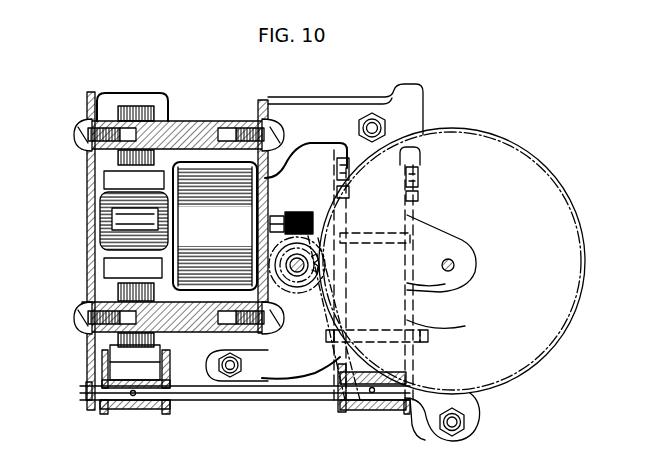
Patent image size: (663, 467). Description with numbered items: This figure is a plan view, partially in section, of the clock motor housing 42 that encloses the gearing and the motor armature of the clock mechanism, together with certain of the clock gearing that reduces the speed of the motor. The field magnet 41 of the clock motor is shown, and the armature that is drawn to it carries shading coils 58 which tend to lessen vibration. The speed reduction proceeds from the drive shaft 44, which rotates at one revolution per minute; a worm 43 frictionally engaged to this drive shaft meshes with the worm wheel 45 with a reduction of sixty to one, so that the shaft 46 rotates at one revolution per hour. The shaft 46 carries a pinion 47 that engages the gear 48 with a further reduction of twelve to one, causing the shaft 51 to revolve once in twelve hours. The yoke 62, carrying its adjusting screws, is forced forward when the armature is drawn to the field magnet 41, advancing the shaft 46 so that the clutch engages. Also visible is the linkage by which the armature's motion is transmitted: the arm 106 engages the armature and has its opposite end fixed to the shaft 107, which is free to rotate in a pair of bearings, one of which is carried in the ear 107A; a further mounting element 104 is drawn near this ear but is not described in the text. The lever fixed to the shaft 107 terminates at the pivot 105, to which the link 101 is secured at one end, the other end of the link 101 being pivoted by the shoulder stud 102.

The field magnet 41 is at (150, 110).
The housing 42 is at (215, 226).
The worm 43 is at (296, 212).
The drive shaft 44 is at (313, 238).
The worm wheel 45 is at (285, 290).
The shaft 46 is at (302, 268).
The pinion 47 is at (297, 278).
The gear 48 is at (522, 378).
The shaft 51 is at (454, 266).
The shading coils 58 is at (158, 96).
The yoke 62 is at (440, 290).
The link 101 is at (338, 355).
The shoulder stud 102 is at (346, 176).
The mounting bracket 104 is at (468, 420).
The pivot 105 is at (426, 340).
The arm 106 is at (170, 380).
The shaft 107 is at (295, 398).
The ear 107A is at (419, 402).